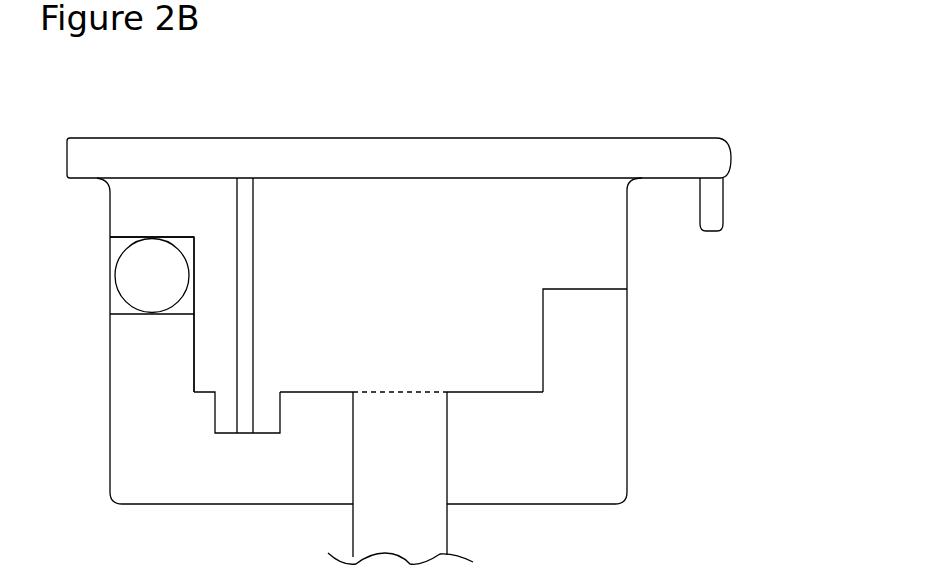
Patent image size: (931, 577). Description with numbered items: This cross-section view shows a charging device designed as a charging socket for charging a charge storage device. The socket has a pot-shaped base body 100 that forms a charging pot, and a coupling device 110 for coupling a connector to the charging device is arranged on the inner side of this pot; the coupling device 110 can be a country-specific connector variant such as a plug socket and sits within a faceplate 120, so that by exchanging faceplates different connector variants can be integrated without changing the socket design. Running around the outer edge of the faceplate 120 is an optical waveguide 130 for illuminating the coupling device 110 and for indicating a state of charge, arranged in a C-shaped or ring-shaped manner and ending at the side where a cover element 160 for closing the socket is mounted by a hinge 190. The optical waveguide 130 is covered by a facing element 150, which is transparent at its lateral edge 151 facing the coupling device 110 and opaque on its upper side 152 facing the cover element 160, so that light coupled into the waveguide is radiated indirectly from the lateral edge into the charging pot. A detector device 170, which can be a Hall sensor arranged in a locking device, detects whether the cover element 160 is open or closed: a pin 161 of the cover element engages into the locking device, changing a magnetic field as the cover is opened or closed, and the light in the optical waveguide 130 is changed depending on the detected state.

The base body 100 is at (603, 372).
The coupling device 110 is at (415, 495).
The faceplate 120 is at (490, 390).
The optical waveguide 130 is at (130, 281).
The facing element 150 is at (195, 212).
The lateral edge 151 is at (195, 258).
The upper side 152 is at (142, 237).
The cover element 160 is at (374, 138).
The pin 161 is at (247, 332).
The detector device 170 is at (212, 424).
The hinge 190 is at (710, 220).